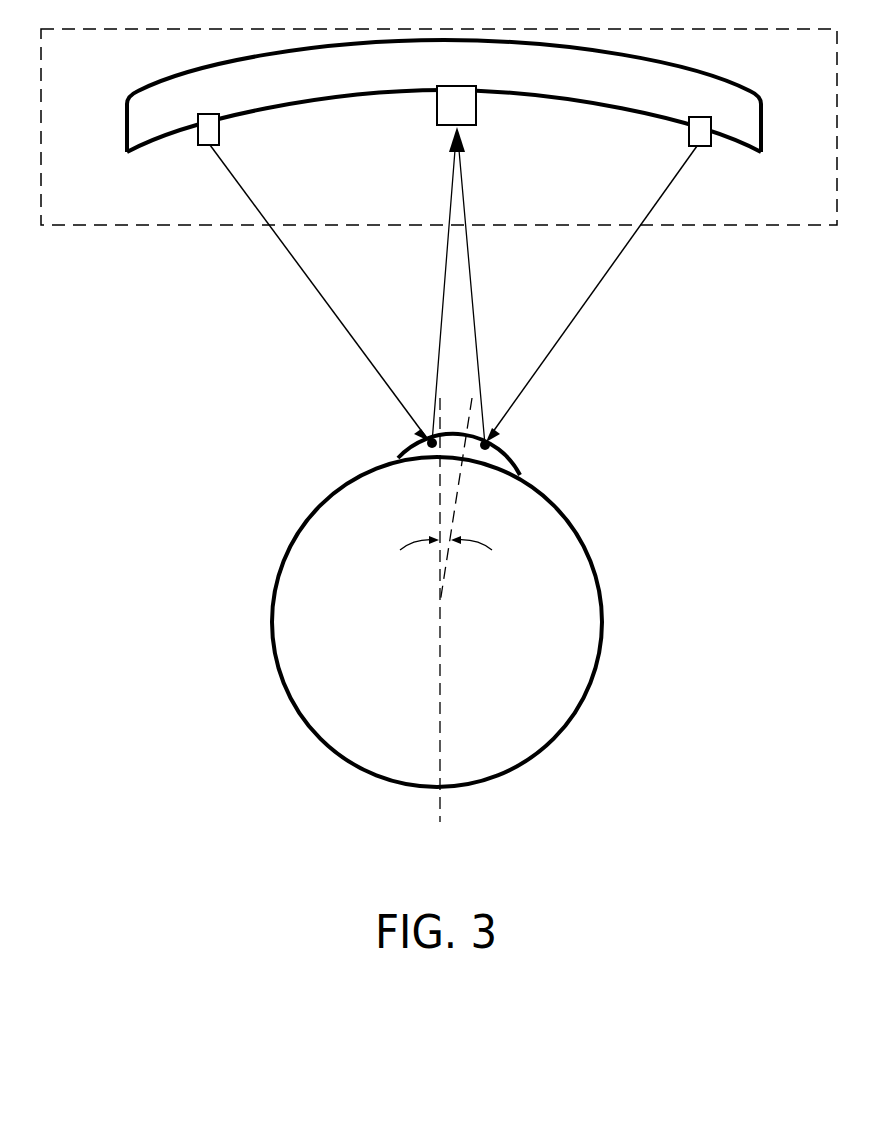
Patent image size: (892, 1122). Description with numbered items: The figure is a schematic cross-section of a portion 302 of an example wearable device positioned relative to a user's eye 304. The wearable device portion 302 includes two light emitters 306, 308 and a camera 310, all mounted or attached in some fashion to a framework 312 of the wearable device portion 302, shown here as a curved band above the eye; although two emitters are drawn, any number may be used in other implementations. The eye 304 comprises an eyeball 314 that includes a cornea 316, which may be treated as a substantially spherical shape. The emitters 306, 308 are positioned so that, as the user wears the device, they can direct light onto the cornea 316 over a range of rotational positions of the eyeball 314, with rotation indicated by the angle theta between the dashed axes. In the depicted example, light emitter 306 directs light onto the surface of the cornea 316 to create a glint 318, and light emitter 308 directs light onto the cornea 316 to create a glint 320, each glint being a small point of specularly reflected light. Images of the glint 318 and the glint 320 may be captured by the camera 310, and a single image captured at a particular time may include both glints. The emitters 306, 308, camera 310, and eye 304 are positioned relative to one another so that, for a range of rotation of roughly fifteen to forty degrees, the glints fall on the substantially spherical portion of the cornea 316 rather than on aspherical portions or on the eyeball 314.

The wearable device portion 302 is at (212, 225).
The eye 304 is at (462, 610).
The light emitter 306 is at (197, 138).
The light emitter 308 is at (713, 138).
The camera 310 is at (437, 113).
The framework 312 is at (444, 96).
The eyeball 314 is at (292, 538).
The cornea 316 is at (497, 447).
The glint 318 is at (432, 447).
The glint 320 is at (485, 449).